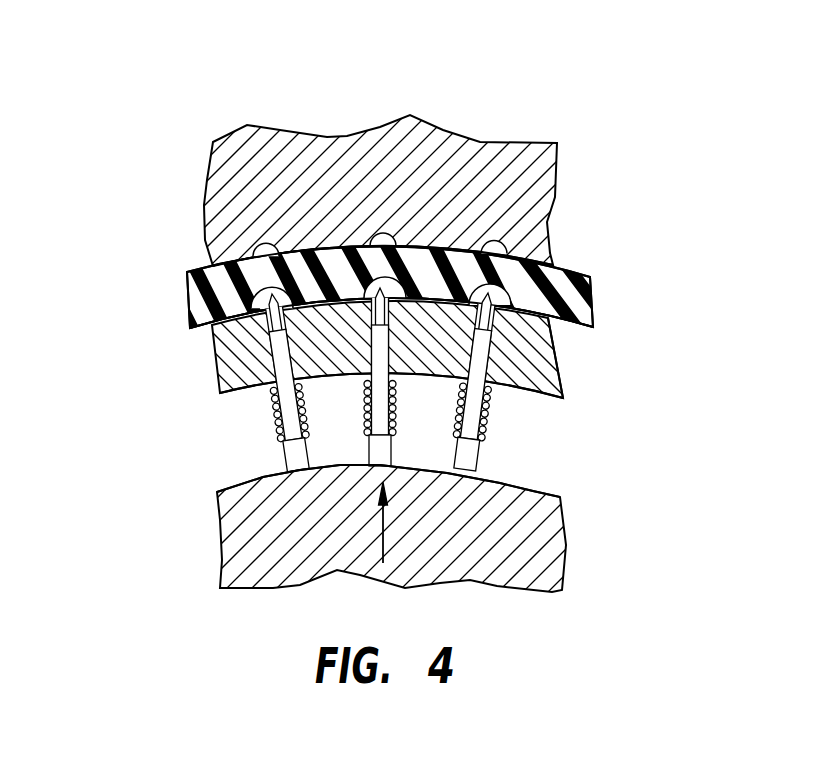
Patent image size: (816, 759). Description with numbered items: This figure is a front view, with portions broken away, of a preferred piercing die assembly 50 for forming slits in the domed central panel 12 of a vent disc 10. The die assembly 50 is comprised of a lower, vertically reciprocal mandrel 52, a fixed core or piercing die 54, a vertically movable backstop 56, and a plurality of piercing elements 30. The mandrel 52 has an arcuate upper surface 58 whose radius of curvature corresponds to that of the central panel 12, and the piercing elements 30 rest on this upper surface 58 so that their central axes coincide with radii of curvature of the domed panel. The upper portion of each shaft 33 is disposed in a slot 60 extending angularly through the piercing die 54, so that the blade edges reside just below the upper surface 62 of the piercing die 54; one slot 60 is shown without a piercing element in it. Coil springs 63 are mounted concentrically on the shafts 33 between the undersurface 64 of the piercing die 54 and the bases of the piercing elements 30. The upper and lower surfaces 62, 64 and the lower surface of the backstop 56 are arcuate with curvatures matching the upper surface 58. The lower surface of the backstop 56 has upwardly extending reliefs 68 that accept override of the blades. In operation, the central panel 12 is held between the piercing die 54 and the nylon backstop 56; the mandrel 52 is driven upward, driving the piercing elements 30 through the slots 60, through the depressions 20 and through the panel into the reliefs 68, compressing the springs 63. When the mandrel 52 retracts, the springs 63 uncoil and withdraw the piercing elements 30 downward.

The vent disc 10 is at (590, 270).
The central panel 12 is at (573, 302).
The depression 20 is at (238, 290).
The piercing element 30 is at (273, 412).
The shaft 33 is at (366, 380).
The piercing die assembly 50 is at (477, 92).
The mandrel 52 is at (319, 534).
The piercing die 54 is at (562, 382).
The backstop 56 is at (394, 190).
The upper surface 58 is at (543, 487).
The slot 60 is at (268, 370).
The upper surface 62 is at (553, 358).
The coil spring 63 is at (277, 425).
The undersurface 64 is at (563, 398).
The relief 68 is at (257, 243).